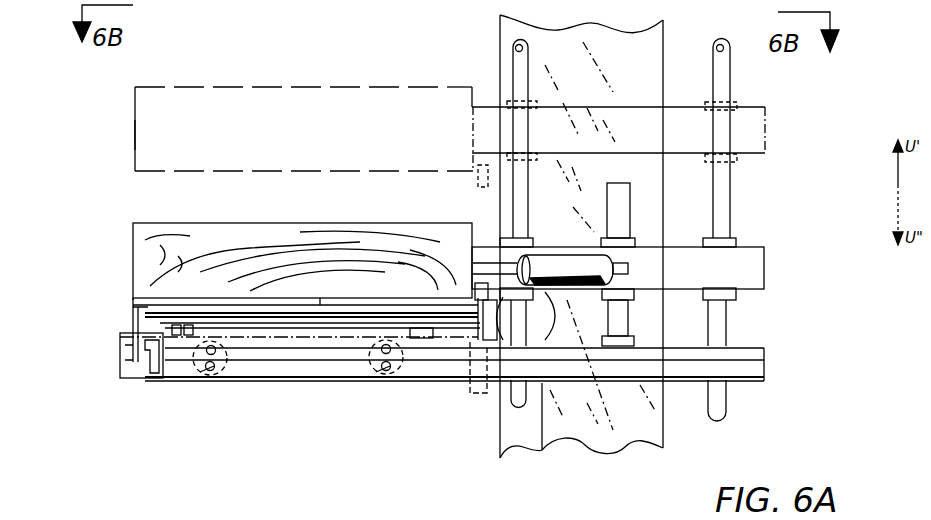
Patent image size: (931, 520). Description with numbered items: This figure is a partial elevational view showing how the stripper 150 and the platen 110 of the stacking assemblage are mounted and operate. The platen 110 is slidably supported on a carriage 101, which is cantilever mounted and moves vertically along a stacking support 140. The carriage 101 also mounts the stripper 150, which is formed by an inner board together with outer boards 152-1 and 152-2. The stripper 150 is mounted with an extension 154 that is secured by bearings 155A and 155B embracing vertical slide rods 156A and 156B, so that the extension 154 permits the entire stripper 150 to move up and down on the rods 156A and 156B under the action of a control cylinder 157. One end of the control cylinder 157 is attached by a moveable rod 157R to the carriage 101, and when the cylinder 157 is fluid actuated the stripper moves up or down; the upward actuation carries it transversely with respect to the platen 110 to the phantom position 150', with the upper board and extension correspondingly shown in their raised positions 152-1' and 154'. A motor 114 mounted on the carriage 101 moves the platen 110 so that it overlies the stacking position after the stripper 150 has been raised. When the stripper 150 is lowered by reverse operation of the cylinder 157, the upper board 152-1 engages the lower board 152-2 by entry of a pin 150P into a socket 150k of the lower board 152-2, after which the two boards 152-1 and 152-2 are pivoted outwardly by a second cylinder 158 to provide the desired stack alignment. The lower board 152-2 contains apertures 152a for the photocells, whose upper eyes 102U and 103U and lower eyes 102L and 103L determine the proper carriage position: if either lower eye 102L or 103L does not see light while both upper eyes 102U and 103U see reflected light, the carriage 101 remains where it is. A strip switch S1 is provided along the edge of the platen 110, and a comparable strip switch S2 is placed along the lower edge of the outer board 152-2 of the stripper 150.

The stripper 150 is at (262, 273).
The phantom position of stripper 150' is at (263, 129).
The outer board 152-1 is at (242, 261).
The outer board in raised position 152-1' is at (255, 139).
The outer board 152-2 is at (128, 371).
The apertures 152a is at (370, 372).
The pin 150P is at (480, 158).
The socket 150k is at (472, 390).
The platen 110 is at (130, 318).
The carriage 101 is at (178, 373).
The upper eye 102U is at (215, 356).
The lower eye 102L is at (188, 370).
The upper eye 103U is at (392, 356).
The lower eye 103L is at (380, 372).
The strip switch S1 is at (133, 300).
The strip switch S2 is at (213, 380).
The extension 154 is at (655, 268).
The extension in raised position 154' is at (655, 131).
The bearing 155A is at (500, 238).
The bearing 155B is at (735, 240).
The vertical slide rod 156A is at (511, 201).
The vertical slide rod 156B is at (730, 189).
The control cylinder 157 is at (627, 236).
The moveable rod 157R is at (627, 322).
The second cylinder 158 is at (547, 323).
The motor 114 is at (553, 284).
The stacking support 140 is at (540, 443).